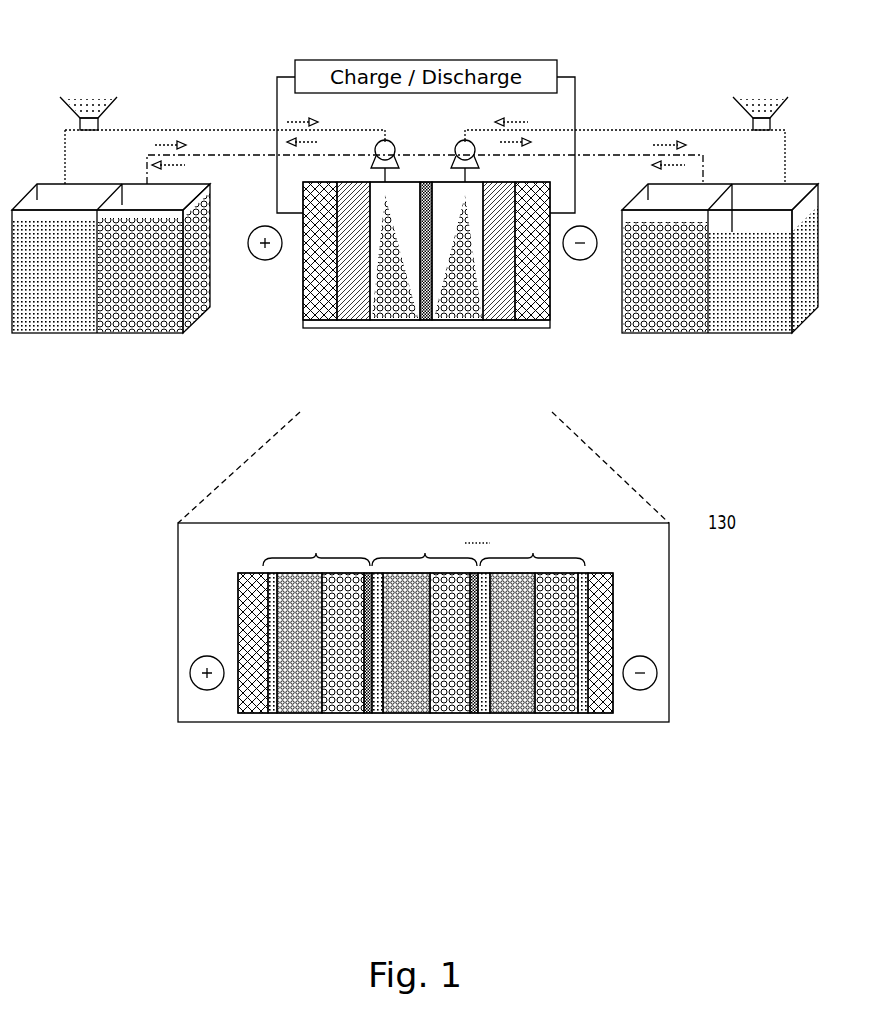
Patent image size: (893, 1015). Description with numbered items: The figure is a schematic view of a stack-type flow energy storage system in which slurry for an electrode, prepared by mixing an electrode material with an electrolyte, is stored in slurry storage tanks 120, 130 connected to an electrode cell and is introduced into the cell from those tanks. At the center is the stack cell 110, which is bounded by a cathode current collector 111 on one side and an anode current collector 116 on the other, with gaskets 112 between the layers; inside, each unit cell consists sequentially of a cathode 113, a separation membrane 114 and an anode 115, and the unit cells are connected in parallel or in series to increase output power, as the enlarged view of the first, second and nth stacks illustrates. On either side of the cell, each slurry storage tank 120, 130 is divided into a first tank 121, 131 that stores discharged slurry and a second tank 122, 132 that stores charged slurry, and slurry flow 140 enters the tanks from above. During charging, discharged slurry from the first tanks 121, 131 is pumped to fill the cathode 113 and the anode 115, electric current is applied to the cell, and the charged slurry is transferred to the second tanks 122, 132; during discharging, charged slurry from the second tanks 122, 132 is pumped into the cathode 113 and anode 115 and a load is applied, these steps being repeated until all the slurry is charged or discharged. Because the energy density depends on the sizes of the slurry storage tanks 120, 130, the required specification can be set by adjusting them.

The stack cell 110 is at (300, 393).
The cathode current collector 111 is at (320, 312).
The gasket 112 is at (350, 312).
The cathode 113 is at (392, 312).
The separation membrane 114 is at (426, 312).
The anode 115 is at (460, 312).
The anode current collector 116 is at (534, 312).
The slurry storage tank 120 is at (111, 317).
The first tank for storing slurry for electrode 121 is at (55, 333).
The second tank for storing slurry for electrode 122 is at (154, 285).
The slurry storage tank 130 is at (720, 317).
The first tank for storing slurry for electrode 131 is at (763, 292).
The second tank for storing slurry for electrode 132 is at (663, 333).
The slurry flow 140 is at (81, 92).